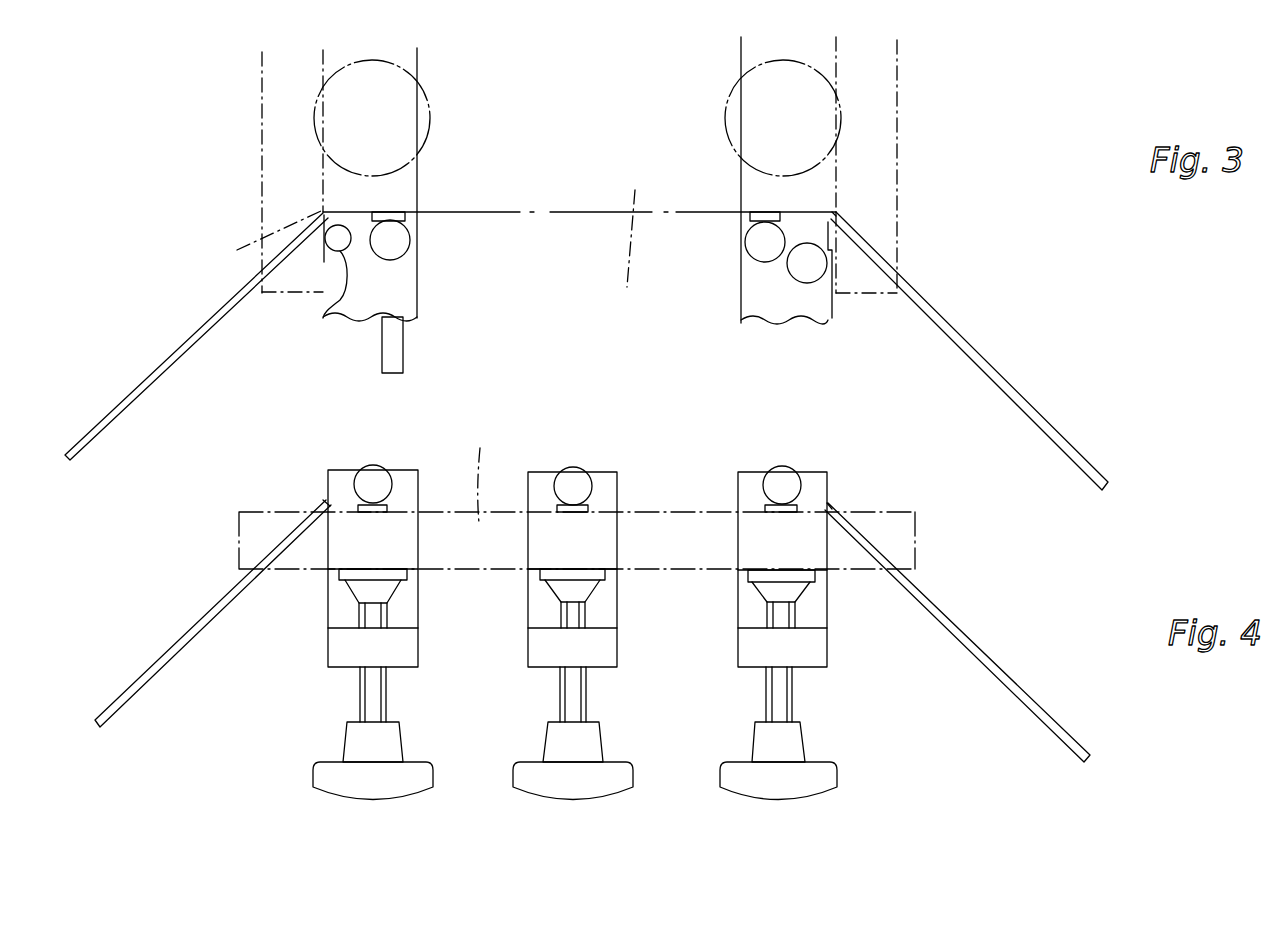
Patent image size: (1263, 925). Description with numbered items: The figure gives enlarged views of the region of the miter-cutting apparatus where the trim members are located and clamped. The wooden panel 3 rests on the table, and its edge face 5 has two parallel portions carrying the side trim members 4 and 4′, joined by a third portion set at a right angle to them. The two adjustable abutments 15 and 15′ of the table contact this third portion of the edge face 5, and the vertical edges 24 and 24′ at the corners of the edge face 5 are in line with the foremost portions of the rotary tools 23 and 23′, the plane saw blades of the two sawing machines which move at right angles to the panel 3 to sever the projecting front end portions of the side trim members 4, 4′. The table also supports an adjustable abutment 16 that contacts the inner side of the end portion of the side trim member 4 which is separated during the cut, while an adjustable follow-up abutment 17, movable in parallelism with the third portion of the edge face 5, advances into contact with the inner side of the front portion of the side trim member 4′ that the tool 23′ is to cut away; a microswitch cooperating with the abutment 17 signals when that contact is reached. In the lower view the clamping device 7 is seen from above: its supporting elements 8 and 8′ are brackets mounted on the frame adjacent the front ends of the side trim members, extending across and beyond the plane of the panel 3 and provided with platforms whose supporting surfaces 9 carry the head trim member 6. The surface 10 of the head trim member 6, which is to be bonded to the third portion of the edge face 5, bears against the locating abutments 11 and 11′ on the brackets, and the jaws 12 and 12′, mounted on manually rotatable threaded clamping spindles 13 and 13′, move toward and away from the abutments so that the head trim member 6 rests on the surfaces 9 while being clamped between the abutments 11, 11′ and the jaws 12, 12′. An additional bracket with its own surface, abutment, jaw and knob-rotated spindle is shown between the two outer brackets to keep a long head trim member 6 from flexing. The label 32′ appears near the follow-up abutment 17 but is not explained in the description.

In FIG. 3, the panel 3 is at (625, 255).
In FIG. 3, the side trim member 4 is at (873, 108).
In FIG. 3, the side trim member 4′ is at (318, 202).
In FIG. 3, the edge face 5 is at (578, 213).
In FIG. 4, the head trim member 6 is at (485, 474).
In FIG. 4, the clamping device 7 is at (318, 702).
In FIG. 4, the supporting element 8 is at (764, 462).
In FIG. 4, the supporting element 8′ is at (377, 456).
In FIG. 4, the supporting surface 9 is at (407, 610).
In FIG. 4, the surface 10 is at (657, 510).
In FIG. 4, the abutment 11 is at (785, 510).
In FIG. 4, the abutment 11′ is at (377, 511).
In FIG. 4, the jaw 12 is at (792, 587).
In FIG. 4, the jaw 12′ is at (388, 587).
In FIG. 4, the threaded clamping spindle 13 is at (778, 692).
In FIG. 4, the threaded clamping spindle 13′ is at (373, 705).
In FIG. 3, the abutment 15 is at (750, 236).
In FIG. 3, the abutment 15′ is at (410, 245).
In FIG. 3, the abutment 16 is at (808, 270).
In FIG. 3, the follow-up abutment 17 is at (323, 320).
In FIG. 3, the rotary tool 23 is at (917, 295).
In FIG. 4, the rotary tool 23 is at (940, 612).
In FIG. 3, the rotary tool 23′ is at (220, 317).
In FIG. 4, the rotary tool 23′ is at (218, 608).
In FIG. 3, the vertical edge 24 is at (836, 212).
In FIG. 4, the vertical edge 24 is at (830, 502).
In FIG. 3, the vertical edge 24′ is at (237, 250).
In FIG. 4, the vertical edge 24′ is at (326, 498).
In FIG. 3, the rod 32′ is at (353, 356).